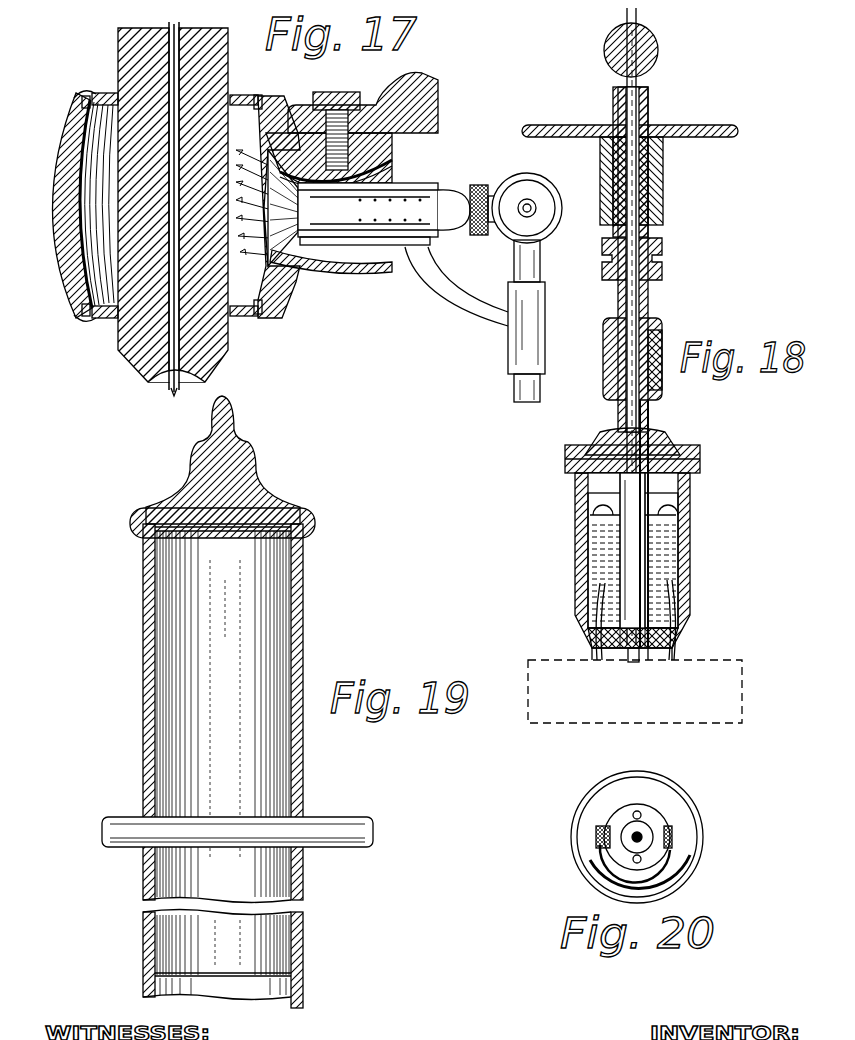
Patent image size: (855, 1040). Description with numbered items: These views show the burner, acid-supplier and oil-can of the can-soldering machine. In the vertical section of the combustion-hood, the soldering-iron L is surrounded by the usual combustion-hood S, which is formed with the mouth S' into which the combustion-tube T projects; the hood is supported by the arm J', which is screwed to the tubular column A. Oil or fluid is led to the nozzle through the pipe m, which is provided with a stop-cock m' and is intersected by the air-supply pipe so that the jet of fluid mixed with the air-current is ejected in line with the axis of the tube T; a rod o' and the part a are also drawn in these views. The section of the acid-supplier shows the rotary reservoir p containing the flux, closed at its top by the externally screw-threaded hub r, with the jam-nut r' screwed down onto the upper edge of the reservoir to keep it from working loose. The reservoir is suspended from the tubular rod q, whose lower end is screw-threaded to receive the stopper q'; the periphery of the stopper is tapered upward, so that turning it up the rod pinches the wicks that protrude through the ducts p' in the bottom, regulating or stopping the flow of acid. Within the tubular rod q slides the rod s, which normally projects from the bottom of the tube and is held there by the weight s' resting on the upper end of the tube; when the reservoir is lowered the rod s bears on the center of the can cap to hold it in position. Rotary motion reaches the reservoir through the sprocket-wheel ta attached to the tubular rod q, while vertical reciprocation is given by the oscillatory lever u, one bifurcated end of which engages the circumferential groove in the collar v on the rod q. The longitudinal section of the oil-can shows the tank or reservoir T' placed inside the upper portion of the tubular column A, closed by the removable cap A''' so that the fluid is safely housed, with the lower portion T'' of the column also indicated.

In FIG. 17, the soldering-iron L is at (118, 55).
In FIG. 17, the central rod o' is at (158, 198).
In FIG. 17, the combustion-hood S is at (70, 206).
In FIG. 17, the mouth of combustion-hood S' is at (325, 207).
In FIG. 17, the arm J' is at (380, 120).
In FIG. 17, the combustion-tube T is at (368, 196).
In FIG. 17, the oscillatory lever u is at (456, 190).
In FIG. 17, the stop-cock m' is at (519, 220).
In FIG. 17, the pipe m is at (475, 321).
In FIG. 18, the rod s is at (634, 348).
In FIG. 20, the rod s is at (647, 811).
In FIG. 18, the weight s' is at (645, 50).
In FIG. 18, the sprocket-wheel ta is at (700, 137).
In FIG. 18, the collar v is at (663, 262).
In FIG. 18, the tubular rod q is at (616, 320).
In FIG. 20, the tubular rod q is at (606, 810).
In FIG. 18, the hub r is at (645, 429).
In FIG. 18, the jam-nut r' is at (648, 453).
In FIG. 18, the rotary reservoir p is at (612, 560).
In FIG. 20, the rotary reservoir p is at (654, 837).
In FIG. 18, the ducts p' is at (637, 620).
In FIG. 20, the ducts p' is at (675, 843).
In FIG. 18, the stopper q' is at (648, 676).
In FIG. 20, the stopper q' is at (588, 858).
In FIG. 19, the removable cap A''' is at (225, 467).
In FIG. 19, the tubular column A is at (241, 766).
In FIG. 19, the tank or reservoir T' is at (222, 710).
In FIG. 19, the lower tube section T'' is at (222, 942).
In FIG. 19, the cross rod a is at (237, 817).